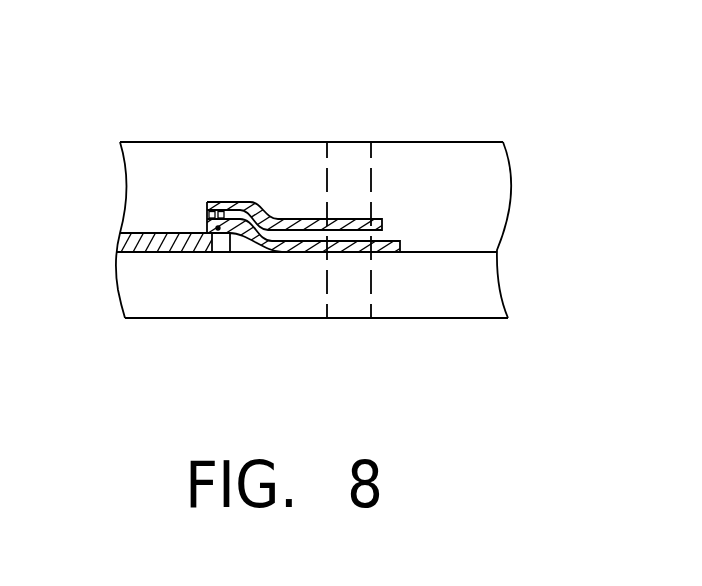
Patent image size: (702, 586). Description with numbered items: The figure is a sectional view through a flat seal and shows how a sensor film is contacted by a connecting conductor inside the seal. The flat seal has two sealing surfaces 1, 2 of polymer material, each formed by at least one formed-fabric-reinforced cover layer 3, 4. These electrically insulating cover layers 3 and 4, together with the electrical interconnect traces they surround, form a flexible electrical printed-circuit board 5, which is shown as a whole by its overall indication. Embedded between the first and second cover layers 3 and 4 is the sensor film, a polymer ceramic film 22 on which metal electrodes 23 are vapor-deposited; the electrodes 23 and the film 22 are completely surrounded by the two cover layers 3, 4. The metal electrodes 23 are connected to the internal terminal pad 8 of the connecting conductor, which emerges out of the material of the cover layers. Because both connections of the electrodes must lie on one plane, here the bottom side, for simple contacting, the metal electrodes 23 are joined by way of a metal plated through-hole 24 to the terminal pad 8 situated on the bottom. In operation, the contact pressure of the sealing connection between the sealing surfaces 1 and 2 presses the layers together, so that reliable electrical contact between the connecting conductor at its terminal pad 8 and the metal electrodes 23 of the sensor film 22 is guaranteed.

The sealing surface 1 is at (146, 143).
The sealing surface 2 is at (477, 318).
The first cover layer 3 is at (493, 157).
The second cover layer 4 is at (487, 295).
The flexible electrical printed-circuit board 5 is at (428, 100).
The internal terminal pad 8 is at (142, 245).
The polymer ceramic film 22 is at (394, 240).
The metal electrodes 23 is at (297, 252).
The metal plated through-hole 24 is at (224, 202).